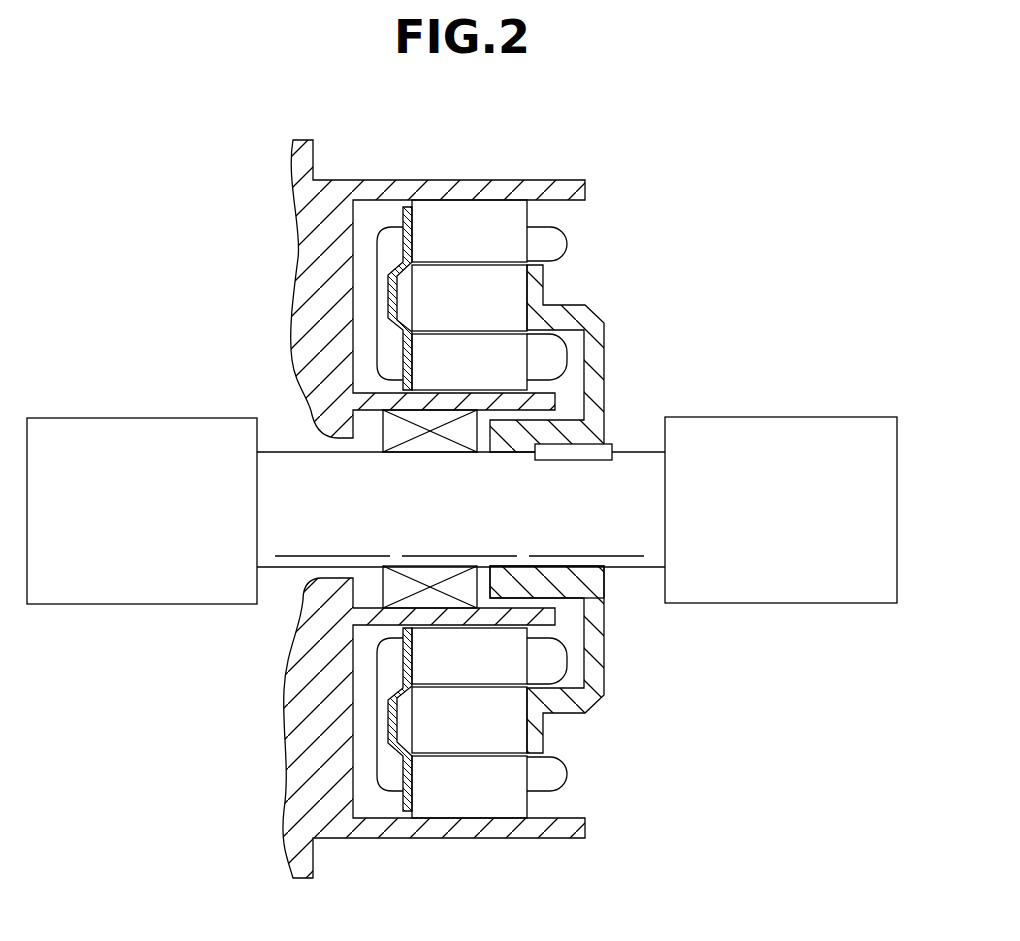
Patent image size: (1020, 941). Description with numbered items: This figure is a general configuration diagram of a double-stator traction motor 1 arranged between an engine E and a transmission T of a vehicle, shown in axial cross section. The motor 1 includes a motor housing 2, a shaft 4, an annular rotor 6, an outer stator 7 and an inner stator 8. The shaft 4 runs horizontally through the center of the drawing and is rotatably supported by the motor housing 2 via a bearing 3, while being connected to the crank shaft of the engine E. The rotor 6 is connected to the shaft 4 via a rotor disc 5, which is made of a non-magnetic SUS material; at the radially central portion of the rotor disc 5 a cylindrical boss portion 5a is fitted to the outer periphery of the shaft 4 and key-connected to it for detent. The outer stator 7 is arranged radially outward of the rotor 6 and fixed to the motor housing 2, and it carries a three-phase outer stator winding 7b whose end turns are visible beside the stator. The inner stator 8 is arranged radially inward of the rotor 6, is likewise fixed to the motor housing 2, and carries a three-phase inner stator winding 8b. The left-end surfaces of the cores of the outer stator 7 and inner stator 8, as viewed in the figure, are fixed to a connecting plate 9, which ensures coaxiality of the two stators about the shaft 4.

The traction motor 1 is at (466, 483).
The motor housing 2 is at (305, 214).
The bearing 3 is at (428, 440).
The shaft 4 is at (312, 471).
The rotor disc 5 is at (600, 666).
The boss portion 5a is at (555, 585).
The annular rotor 6 is at (507, 293).
The outer stator 7 is at (507, 218).
The outer stator winding 7b is at (553, 243).
The inner stator 8 is at (505, 354).
The inner stator winding 8b is at (553, 363).
The connecting plate 9 is at (387, 300).
The engine E is at (88, 591).
The transmission T is at (815, 595).